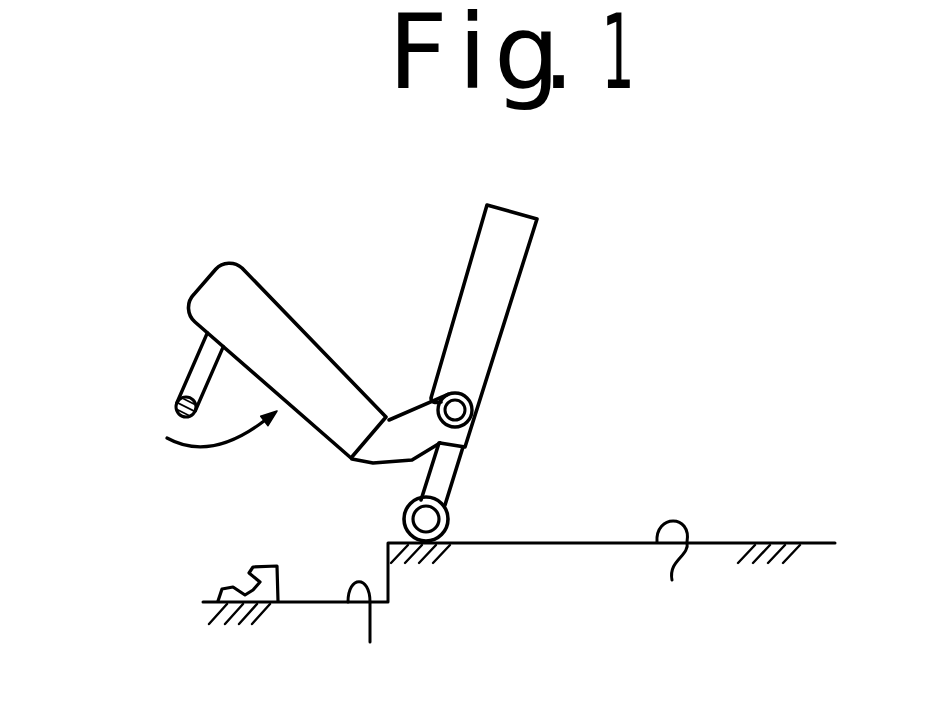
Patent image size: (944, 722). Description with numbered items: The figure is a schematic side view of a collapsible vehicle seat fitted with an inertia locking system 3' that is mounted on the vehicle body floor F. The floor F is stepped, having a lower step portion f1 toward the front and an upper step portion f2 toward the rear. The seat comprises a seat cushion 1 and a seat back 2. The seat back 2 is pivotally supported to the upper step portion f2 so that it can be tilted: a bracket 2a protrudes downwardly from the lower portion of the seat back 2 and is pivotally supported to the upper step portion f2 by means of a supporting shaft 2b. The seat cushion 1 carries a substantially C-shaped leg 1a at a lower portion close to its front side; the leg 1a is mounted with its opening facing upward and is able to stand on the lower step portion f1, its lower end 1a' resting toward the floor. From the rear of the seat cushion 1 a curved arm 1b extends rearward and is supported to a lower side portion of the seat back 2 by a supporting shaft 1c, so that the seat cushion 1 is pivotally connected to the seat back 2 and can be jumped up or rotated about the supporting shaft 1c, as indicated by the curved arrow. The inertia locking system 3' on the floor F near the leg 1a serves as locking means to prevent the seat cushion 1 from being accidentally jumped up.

The seat cushion 1 is at (296, 325).
The C-shaped leg 1a is at (157, 368).
The pin tip / pivot point 1a' is at (138, 432).
The curved arm 1b is at (412, 412).
The supporting shaft 1c is at (458, 409).
The seat back 2 is at (511, 275).
The bracket 2a is at (447, 475).
The supporting shaft 2b is at (435, 520).
The inertia locking system 3' is at (222, 552).
The vehicle body floor F is at (600, 543).
The lower step portion f1 is at (368, 633).
The upper step portion f2 is at (674, 569).